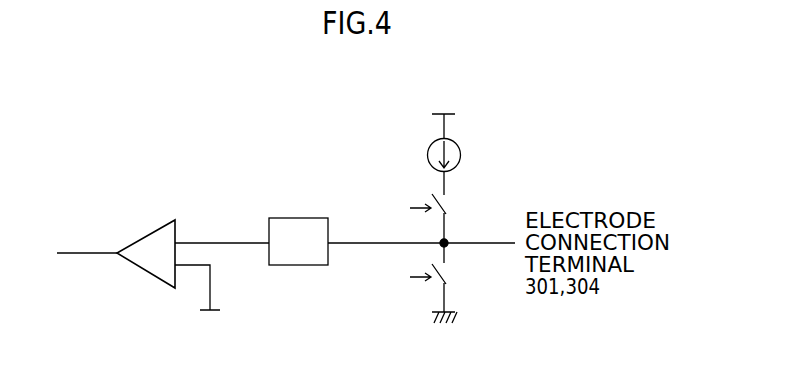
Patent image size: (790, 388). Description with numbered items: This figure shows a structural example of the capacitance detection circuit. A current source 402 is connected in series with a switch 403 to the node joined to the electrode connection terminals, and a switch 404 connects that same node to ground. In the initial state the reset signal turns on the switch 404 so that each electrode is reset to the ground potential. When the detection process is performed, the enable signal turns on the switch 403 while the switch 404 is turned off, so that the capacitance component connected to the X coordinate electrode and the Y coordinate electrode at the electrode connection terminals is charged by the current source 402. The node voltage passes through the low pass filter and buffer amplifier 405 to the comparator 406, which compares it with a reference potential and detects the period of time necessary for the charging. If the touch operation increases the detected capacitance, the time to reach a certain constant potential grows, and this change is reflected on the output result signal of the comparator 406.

The current source 402 is at (468, 138).
The switch 403 is at (455, 203).
The switch 404 is at (457, 276).
The low pass filter and buffer amplifier 405 is at (298, 218).
The comparator 406 is at (142, 275).